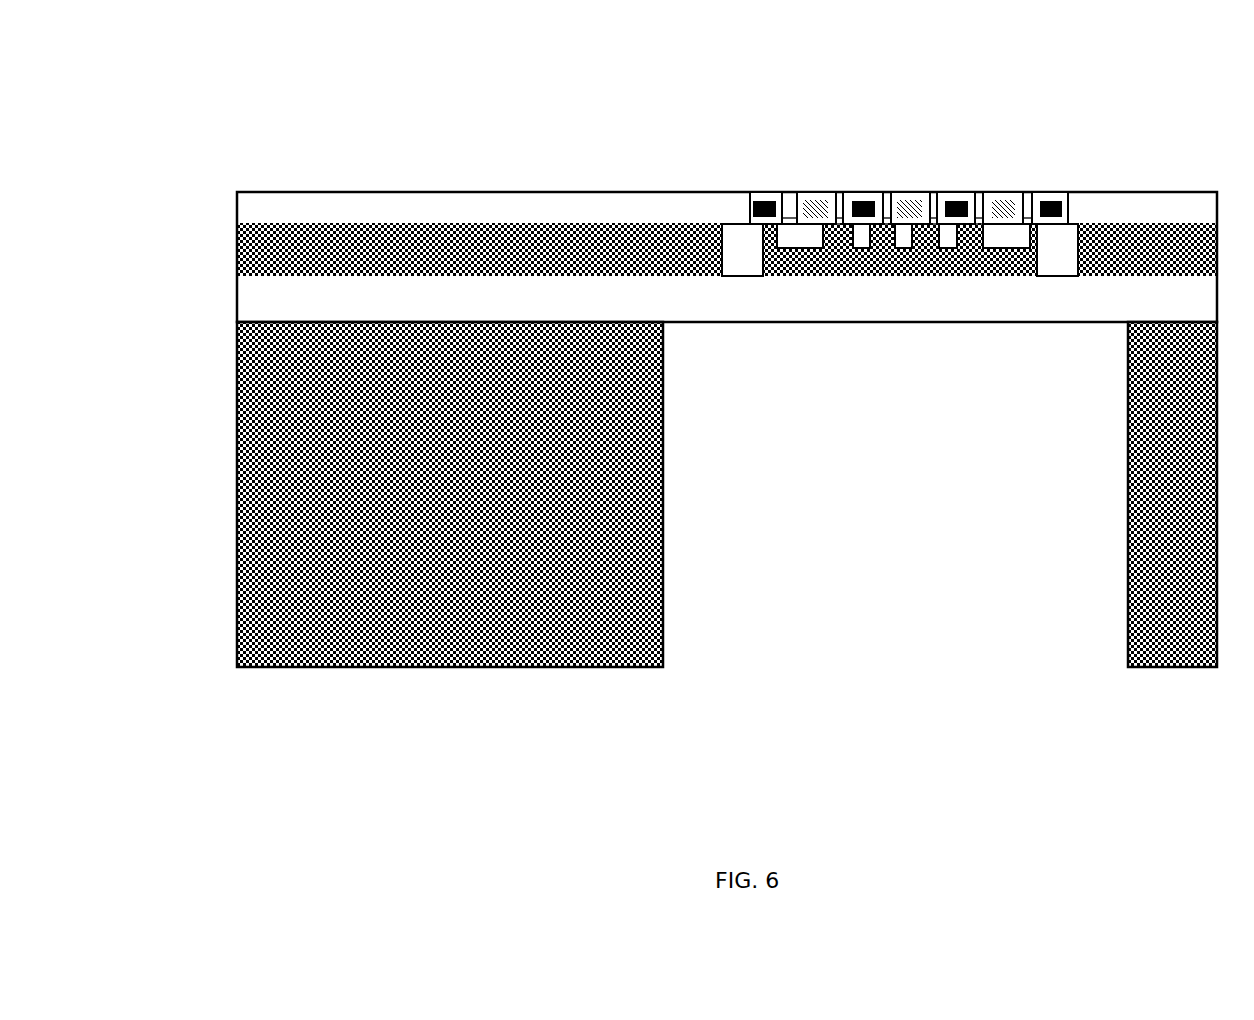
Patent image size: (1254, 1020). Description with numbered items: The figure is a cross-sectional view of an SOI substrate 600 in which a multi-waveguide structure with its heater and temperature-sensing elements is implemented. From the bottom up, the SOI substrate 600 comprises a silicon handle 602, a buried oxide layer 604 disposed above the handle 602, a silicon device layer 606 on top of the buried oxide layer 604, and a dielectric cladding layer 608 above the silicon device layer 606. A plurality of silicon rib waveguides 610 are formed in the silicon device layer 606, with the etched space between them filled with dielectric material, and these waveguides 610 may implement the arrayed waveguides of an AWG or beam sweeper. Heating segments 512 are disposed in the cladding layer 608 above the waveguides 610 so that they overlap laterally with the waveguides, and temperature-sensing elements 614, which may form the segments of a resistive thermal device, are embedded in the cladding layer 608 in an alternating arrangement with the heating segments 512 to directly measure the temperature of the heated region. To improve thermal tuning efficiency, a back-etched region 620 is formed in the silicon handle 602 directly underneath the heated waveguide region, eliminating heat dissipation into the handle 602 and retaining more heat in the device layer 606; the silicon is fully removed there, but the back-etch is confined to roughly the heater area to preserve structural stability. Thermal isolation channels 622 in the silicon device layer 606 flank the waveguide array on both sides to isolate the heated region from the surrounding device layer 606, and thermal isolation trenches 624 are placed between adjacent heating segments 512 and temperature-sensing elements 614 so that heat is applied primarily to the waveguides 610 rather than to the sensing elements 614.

The SOI substrate 600 is at (338, 106).
The silicon handle 602 is at (237, 440).
The buried oxide (BOX) layer 604 is at (237, 295).
The silicon device layer 606 is at (237, 245).
The dielectric cladding layer 608 is at (237, 205).
The silicon rib waveguides 610 is at (968, 247).
The heating segments 512 is at (863, 203).
The temperature-sensing elements 614 is at (1005, 203).
The back-etched region 620 is at (1002, 636).
The thermal isolation channels 622 is at (747, 248).
The thermal isolation trenches 624 is at (933, 216).